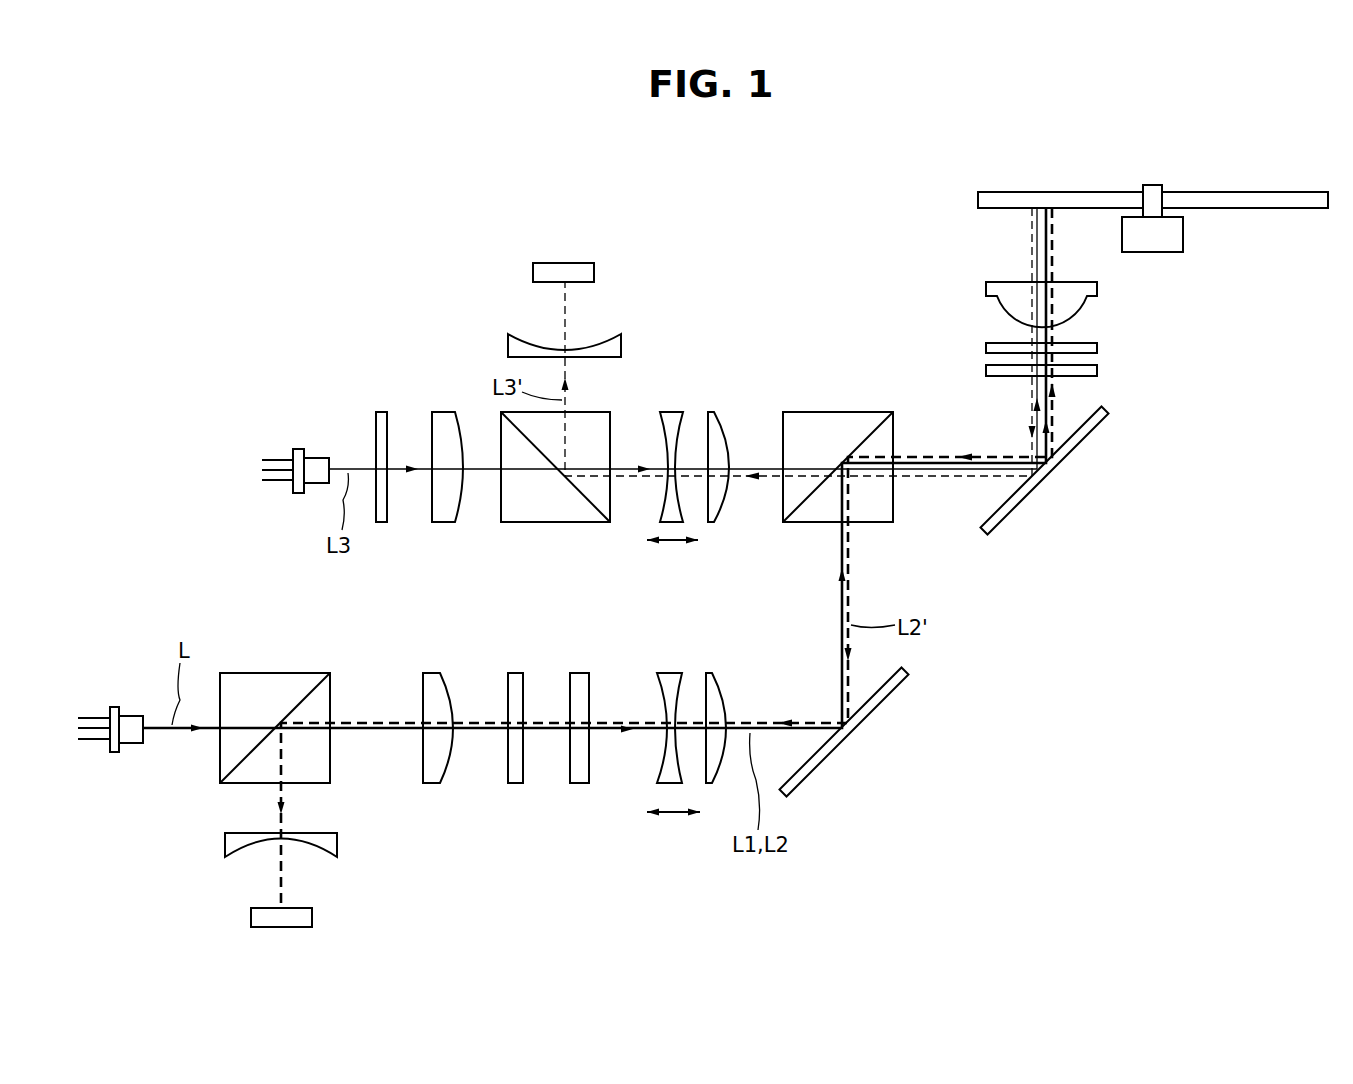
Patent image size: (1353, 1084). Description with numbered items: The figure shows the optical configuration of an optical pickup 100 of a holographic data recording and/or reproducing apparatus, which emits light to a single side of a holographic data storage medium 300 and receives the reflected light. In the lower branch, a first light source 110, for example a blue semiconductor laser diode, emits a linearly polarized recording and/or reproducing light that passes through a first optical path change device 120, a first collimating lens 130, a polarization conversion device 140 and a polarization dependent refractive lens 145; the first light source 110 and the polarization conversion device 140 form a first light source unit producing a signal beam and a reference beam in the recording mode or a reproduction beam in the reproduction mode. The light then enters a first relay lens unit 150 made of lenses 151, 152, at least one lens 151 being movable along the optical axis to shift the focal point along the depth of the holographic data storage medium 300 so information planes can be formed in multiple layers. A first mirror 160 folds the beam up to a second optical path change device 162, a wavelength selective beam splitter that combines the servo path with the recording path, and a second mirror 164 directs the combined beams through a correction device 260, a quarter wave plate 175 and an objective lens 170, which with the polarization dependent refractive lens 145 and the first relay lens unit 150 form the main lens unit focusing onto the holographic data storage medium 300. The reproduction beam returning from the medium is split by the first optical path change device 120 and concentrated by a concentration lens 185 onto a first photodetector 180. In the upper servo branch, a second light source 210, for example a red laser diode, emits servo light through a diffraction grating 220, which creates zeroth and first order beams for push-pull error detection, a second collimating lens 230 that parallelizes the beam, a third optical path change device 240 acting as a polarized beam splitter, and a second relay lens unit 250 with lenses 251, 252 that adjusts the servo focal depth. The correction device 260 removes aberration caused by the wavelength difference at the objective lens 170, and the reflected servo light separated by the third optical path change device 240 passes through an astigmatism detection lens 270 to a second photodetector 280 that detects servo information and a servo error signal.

The optical pickup 100 is at (278, 237).
The first light source 110 is at (132, 716).
The first optical path change device 120 is at (275, 673).
The first collimating lens 130 is at (430, 673).
The polarization conversion device 140 is at (515, 673).
The polarization dependent refractive lens 145 is at (580, 673).
The first relay lens unit 150 is at (699, 678).
The lens 151 is at (670, 673).
The lens 152 is at (729, 703).
The first mirror 160 is at (883, 703).
The second optical path change device 162 is at (840, 412).
The second mirror 164 is at (1085, 432).
The objective lens 170 is at (1097, 288).
The quarter wave plate 175 is at (1097, 348).
The first photodetector 180 is at (312, 917).
The concentration lens 185 is at (337, 845).
The second light source 210 is at (297, 449).
The diffraction grating 220 is at (380, 412).
The second collimating lens 230 is at (447, 412).
The third optical path change device 240 is at (498, 505).
The second relay lens unit 250 is at (708, 410).
The lens 251 is at (673, 412).
The lens 252 is at (718, 412).
The correction device 260 is at (1097, 372).
The detection lens 270 is at (508, 337).
The second photodetector 280 is at (533, 270).
The holographic data storage medium 300 is at (978, 197).